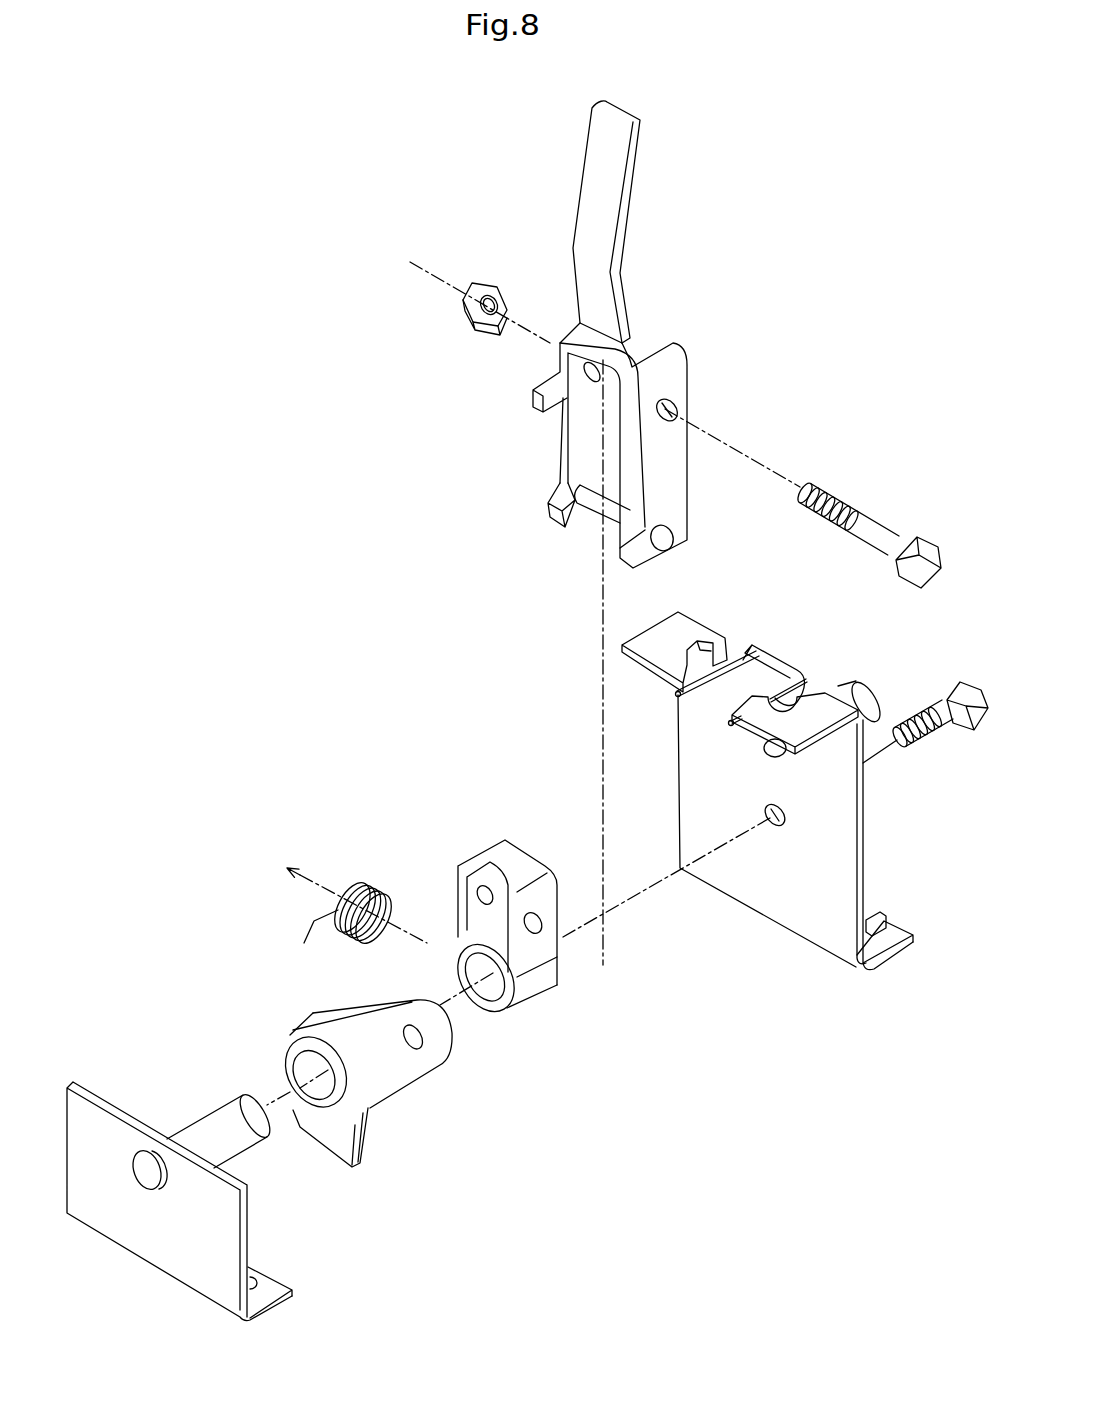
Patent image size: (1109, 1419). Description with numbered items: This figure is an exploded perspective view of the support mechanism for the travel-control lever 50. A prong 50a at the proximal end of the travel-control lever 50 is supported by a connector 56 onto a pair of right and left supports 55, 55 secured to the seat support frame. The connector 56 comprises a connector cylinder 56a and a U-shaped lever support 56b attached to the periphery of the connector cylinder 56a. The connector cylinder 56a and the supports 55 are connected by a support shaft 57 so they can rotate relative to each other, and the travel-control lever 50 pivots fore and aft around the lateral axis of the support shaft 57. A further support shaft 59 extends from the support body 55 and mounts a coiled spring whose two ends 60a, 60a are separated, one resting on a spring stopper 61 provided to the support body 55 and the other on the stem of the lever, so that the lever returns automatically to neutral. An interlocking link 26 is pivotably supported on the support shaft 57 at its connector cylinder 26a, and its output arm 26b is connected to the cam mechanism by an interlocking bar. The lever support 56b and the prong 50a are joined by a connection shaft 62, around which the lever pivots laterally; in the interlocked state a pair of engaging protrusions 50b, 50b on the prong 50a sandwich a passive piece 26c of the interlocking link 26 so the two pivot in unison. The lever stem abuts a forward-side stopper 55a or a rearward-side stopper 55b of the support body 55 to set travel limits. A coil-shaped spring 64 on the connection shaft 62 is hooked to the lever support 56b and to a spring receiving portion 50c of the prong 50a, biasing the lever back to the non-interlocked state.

The travel-control lever 50 is at (526, 252).
The prong 50a is at (677, 375).
The engaging protrusions 50b is at (553, 510).
The spring receiving portion 50c is at (533, 397).
The support 55 is at (767, 898).
The forward-side stopper 55a is at (778, 673).
The rearward-side stopper 55b is at (700, 646).
The connector 56 is at (567, 917).
The connector cylinder 56a is at (532, 990).
The lever support 56b is at (487, 858).
The support shaft 57 is at (243, 1140).
The support shaft 59 is at (865, 695).
The spring ends 60a is at (729, 722).
The spring stopper 61 is at (765, 647).
The connection shaft 62 is at (878, 523).
The coil-shaped spring 64 is at (360, 888).
The interlocking link 26 is at (341, 1072).
The connector cylinder 26a is at (290, 1053).
The output arm 26b is at (427, 1063).
The passive piece 26c is at (340, 1135).